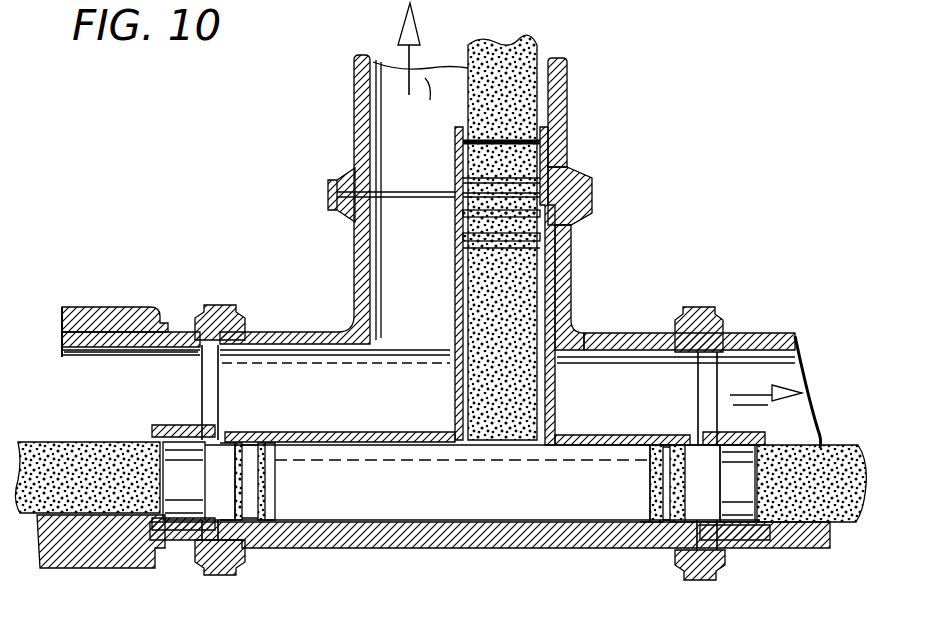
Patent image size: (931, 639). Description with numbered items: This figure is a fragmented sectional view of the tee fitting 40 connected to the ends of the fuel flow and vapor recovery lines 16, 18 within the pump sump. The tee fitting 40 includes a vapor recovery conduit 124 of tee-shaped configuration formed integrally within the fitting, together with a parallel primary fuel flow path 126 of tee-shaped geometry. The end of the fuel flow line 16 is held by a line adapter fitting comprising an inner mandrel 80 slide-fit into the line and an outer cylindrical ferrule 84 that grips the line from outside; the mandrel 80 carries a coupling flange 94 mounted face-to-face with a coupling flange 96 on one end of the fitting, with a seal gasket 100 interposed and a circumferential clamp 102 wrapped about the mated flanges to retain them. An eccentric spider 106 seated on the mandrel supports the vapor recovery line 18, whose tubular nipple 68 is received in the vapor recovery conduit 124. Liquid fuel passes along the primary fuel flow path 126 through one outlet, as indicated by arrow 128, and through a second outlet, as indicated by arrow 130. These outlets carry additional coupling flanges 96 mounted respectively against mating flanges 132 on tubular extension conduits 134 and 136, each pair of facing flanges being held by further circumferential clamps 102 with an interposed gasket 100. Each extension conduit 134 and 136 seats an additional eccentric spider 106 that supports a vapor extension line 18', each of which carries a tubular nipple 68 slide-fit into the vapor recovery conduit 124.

The tee fitting 40 is at (627, 296).
The primary fuel flow line 16 is at (62, 330).
The vapor recovery line 18 is at (87, 442).
The vapor extension line 18' is at (671, 265).
The tubular nipple 68 is at (500, 250).
The inner mandrel 80 is at (100, 352).
The outer cylindrical ferrule 84 is at (86, 307).
The coupling flange 94 is at (197, 553).
The coupling flange 96 is at (372, 222).
The seal gasket 100 is at (572, 240).
The circumferential clamp 102 is at (328, 195).
The eccentric spider 106 is at (558, 148).
The vapor recovery conduit 124 is at (425, 510).
The primary fuel flow path 126 is at (340, 352).
The arrow 128 is at (430, 67).
The arrow 130 is at (730, 395).
The mating flange 132 is at (585, 170).
The tubular extension conduit 134 is at (568, 100).
The tubular extension conduit 136 is at (762, 335).